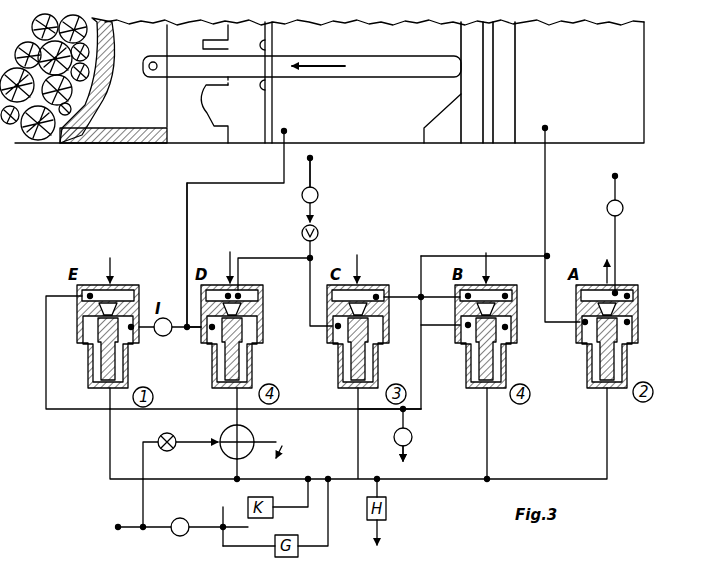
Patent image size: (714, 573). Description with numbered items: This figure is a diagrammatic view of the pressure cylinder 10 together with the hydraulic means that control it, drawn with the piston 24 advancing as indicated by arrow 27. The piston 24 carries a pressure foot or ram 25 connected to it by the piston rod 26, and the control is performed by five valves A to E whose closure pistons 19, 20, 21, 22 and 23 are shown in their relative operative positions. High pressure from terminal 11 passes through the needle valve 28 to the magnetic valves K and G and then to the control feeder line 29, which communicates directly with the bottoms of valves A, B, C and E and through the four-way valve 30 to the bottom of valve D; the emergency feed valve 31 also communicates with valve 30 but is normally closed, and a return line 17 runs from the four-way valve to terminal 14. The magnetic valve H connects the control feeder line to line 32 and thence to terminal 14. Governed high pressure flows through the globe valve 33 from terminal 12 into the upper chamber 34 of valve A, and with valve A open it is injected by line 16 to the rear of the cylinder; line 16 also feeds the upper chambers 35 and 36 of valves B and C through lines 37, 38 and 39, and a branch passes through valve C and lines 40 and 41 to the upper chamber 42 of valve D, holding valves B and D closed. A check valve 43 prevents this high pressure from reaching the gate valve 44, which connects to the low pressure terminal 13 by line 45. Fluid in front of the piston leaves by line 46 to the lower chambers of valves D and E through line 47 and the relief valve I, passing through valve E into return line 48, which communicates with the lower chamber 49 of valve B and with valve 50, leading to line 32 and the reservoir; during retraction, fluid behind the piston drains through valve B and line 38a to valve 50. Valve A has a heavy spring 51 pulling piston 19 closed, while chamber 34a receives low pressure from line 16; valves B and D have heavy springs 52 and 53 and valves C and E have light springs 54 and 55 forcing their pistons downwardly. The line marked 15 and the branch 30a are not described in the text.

The pressure cylinder 10 is at (648, 83).
The terminal 11 is at (133, 507).
The terminal 12 is at (626, 179).
The low pressure terminal 13 is at (321, 168).
The terminal 14 is at (278, 462).
The line 15 is at (283, 158).
The line 16 is at (548, 202).
The return line 17 is at (277, 442).
The piston 19 is at (612, 348).
The piston 20 is at (492, 350).
The piston 21 is at (366, 350).
The piston 22 is at (240, 350).
The piston 23 is at (116, 350).
The piston 24 is at (508, 48).
The pressure foot 25 is at (118, 140).
The piston rod 26 is at (399, 72).
The arrow 27 is at (326, 71).
The needle valve 28 is at (182, 516).
The control feeder line 29 is at (112, 484).
The four-way valve 30 is at (252, 428).
The line 30a is at (236, 409).
The emergency feed valve 31 is at (160, 436).
The line 32 is at (406, 458).
The globe valve 33 is at (623, 207).
The upper chamber 34 is at (625, 290).
The chamber 34a is at (629, 322).
The upper chamber 35 is at (500, 294).
The upper chamber 36 is at (370, 294).
The line 37 is at (446, 254).
The line 38 is at (433, 332).
The line 38a is at (422, 392).
The line 39 is at (422, 308).
The line 40 is at (310, 304).
The line 41 is at (285, 256).
The upper chamber 42 is at (245, 292).
The check valve 43 is at (318, 230).
The gate valve 44 is at (318, 195).
The line 45 is at (312, 176).
The line 46 is at (188, 240).
The line 47 is at (187, 330).
The return line 48 is at (68, 410).
The lower chamber 49 is at (508, 327).
The valve 50 is at (412, 437).
The heavy spring 51 is at (600, 262).
The heavy spring 52 is at (502, 243).
The heavy spring 53 is at (226, 258).
The light spring 54 is at (368, 262).
The light spring 55 is at (118, 275).